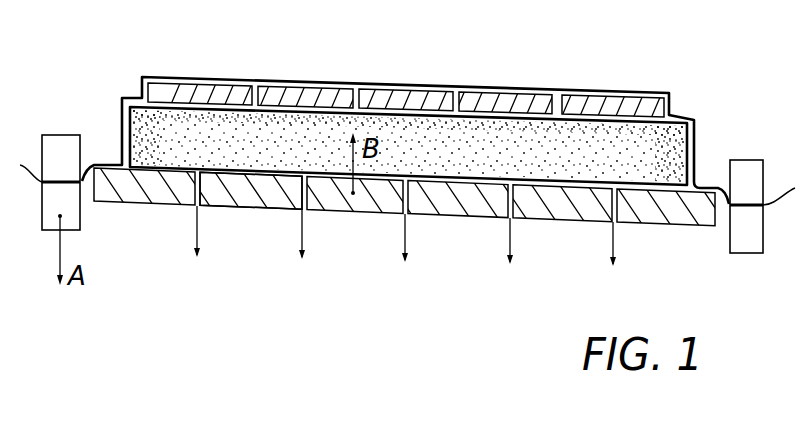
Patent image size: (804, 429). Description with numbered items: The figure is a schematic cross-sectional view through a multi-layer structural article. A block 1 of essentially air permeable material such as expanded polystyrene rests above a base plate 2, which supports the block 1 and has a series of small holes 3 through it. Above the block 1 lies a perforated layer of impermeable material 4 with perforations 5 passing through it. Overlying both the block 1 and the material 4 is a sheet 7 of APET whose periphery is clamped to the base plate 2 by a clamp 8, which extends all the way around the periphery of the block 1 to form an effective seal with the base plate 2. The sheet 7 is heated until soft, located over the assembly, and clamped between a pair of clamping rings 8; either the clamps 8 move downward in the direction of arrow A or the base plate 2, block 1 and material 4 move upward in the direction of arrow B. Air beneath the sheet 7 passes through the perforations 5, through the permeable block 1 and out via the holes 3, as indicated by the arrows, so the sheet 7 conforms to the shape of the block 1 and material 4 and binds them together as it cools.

The block 1 is at (654, 145).
The base plate 2 is at (165, 195).
The holes 3 is at (300, 193).
The layer of impermeable material 4 is at (412, 90).
The perforations 5 is at (455, 97).
The sheet 7 is at (122, 128).
The clamp 8 is at (61, 150).